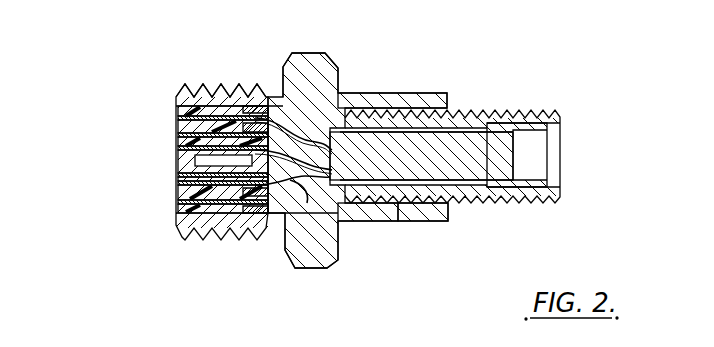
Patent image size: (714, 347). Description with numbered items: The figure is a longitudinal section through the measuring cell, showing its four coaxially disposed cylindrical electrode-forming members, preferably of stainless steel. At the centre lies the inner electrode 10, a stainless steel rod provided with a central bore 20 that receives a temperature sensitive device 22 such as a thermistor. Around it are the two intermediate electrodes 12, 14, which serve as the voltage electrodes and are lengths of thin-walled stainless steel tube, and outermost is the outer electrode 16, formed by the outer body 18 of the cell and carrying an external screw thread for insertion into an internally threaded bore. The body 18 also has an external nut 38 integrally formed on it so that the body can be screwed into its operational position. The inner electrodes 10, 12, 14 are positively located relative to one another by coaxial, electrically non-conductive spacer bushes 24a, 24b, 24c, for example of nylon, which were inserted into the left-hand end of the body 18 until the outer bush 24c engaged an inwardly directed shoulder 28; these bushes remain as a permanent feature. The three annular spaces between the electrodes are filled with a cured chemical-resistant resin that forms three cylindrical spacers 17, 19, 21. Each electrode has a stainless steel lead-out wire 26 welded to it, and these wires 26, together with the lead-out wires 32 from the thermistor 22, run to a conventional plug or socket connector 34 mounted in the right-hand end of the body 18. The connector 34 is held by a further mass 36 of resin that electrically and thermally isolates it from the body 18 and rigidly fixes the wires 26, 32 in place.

The inner electrode 10 is at (177, 165).
The intermediate electrode 12 is at (177, 135).
The intermediate electrode 14 is at (176, 111).
The outer electrode 16 is at (176, 100).
The cylindrical spacer 17 is at (177, 153).
The outer body 18 is at (344, 63).
The cylindrical spacer 19 is at (190, 90).
The central bore 20 is at (177, 176).
The cylindrical spacer 21 is at (177, 208).
The temperature sensitive device 22 is at (208, 128).
The spacer bush 24a is at (238, 138).
The spacer bush 24b is at (202, 236).
The spacer bush 24c is at (225, 236).
The lead-out wire 26 is at (348, 94).
The inwardly directed shoulder 28 is at (296, 105).
The lead-out wire 32 is at (347, 227).
The plug or socket connector 34 is at (474, 112).
The mass of resin 36 is at (392, 227).
The external nut 38 is at (315, 260).